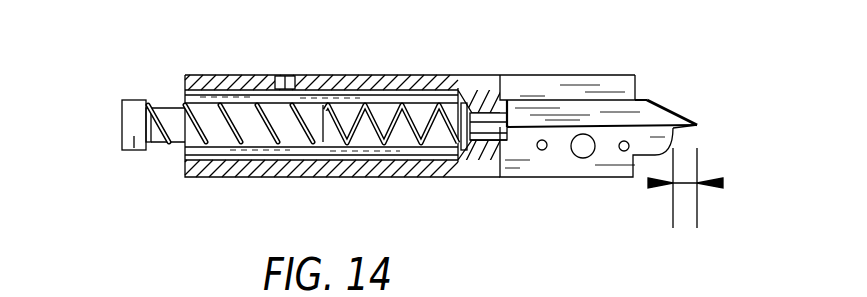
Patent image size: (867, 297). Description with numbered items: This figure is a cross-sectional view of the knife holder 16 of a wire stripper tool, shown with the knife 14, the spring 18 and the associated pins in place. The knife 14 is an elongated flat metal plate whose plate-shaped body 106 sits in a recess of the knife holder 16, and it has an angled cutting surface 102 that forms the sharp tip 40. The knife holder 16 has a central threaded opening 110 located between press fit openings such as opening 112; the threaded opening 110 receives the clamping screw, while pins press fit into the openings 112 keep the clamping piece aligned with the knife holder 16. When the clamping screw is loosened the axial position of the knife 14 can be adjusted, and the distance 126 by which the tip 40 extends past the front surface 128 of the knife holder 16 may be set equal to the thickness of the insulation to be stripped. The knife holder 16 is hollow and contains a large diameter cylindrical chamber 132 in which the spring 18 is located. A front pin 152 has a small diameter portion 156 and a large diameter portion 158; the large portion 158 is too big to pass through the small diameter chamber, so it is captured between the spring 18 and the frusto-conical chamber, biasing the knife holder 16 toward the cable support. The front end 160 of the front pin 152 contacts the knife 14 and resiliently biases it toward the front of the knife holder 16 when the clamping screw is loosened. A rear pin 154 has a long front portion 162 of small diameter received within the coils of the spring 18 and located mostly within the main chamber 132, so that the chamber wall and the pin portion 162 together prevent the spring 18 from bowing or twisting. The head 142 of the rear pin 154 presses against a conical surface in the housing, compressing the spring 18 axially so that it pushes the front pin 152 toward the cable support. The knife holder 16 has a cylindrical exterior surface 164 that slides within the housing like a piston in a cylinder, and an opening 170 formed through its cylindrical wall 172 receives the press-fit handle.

The knife 14 is at (640, 103).
The knife holder 16 is at (211, 82).
The spring 18 is at (348, 112).
The sharp tip 40 is at (695, 124).
The angled cutting surface 102 is at (690, 122).
The plate-shaped body 106 is at (577, 84).
The central threaded opening 110 is at (586, 158).
The press fit opening 112 is at (624, 152).
The distance 126 is at (684, 192).
The front surface 128 is at (673, 131).
The large diameter cylindrical chamber 132 is at (404, 144).
The head 142 is at (122, 112).
The front pin 152 is at (485, 118).
The rear pin 154 is at (133, 142).
The small diameter portion 156 is at (498, 118).
The large diameter portion 158 is at (484, 142).
The front end 160 is at (528, 146).
The long front portion 162 is at (262, 132).
The cylindrical exterior surface 164 is at (208, 173).
The opening 170 is at (286, 80).
The cylindrical wall 172 is at (310, 164).